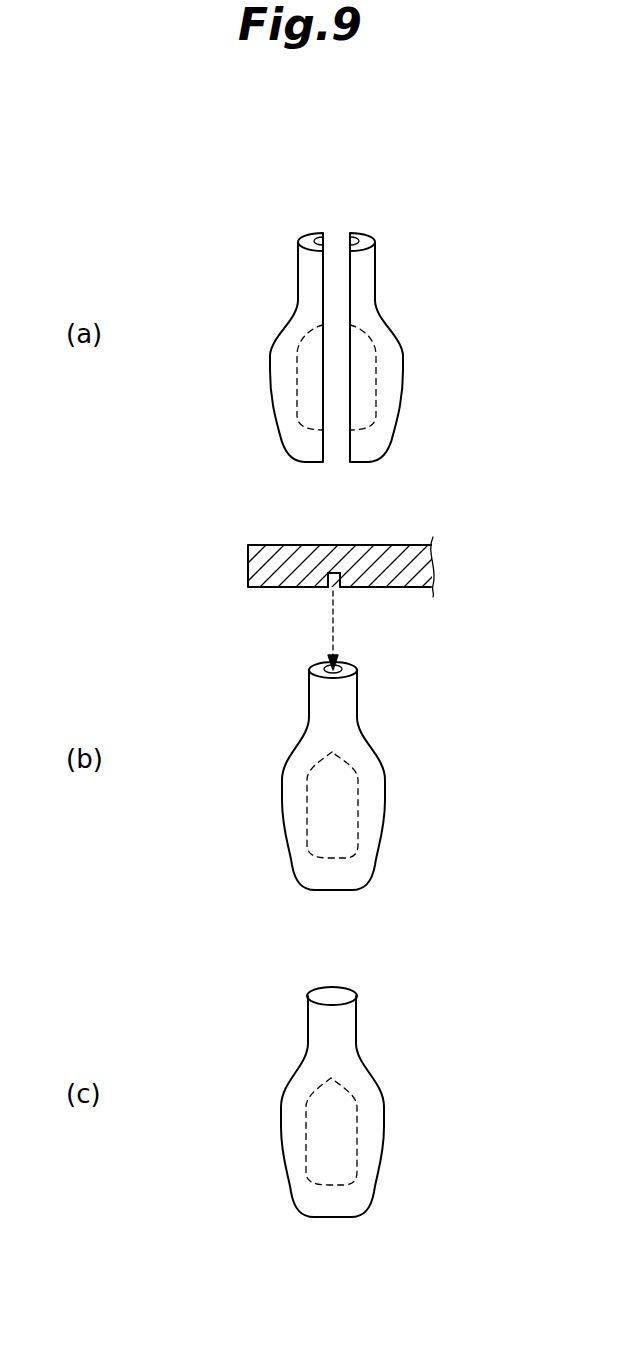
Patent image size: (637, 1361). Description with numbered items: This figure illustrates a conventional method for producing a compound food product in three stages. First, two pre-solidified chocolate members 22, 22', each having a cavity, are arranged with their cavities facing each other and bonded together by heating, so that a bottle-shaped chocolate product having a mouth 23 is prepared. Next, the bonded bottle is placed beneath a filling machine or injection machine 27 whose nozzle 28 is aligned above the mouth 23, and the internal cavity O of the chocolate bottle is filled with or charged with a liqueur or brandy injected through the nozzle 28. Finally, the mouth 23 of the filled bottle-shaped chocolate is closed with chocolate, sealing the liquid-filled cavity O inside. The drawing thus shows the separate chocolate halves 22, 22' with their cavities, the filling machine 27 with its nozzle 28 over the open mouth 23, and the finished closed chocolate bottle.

The pre-solidified chocolate member 22 is at (272, 347).
The pre-solidified chocolate member 22' is at (411, 347).
The mouth 23 is at (353, 240).
The filling machine 27 is at (262, 563).
The nozzle 28 is at (330, 588).
The hollow cavity of the bottle O is at (340, 807).